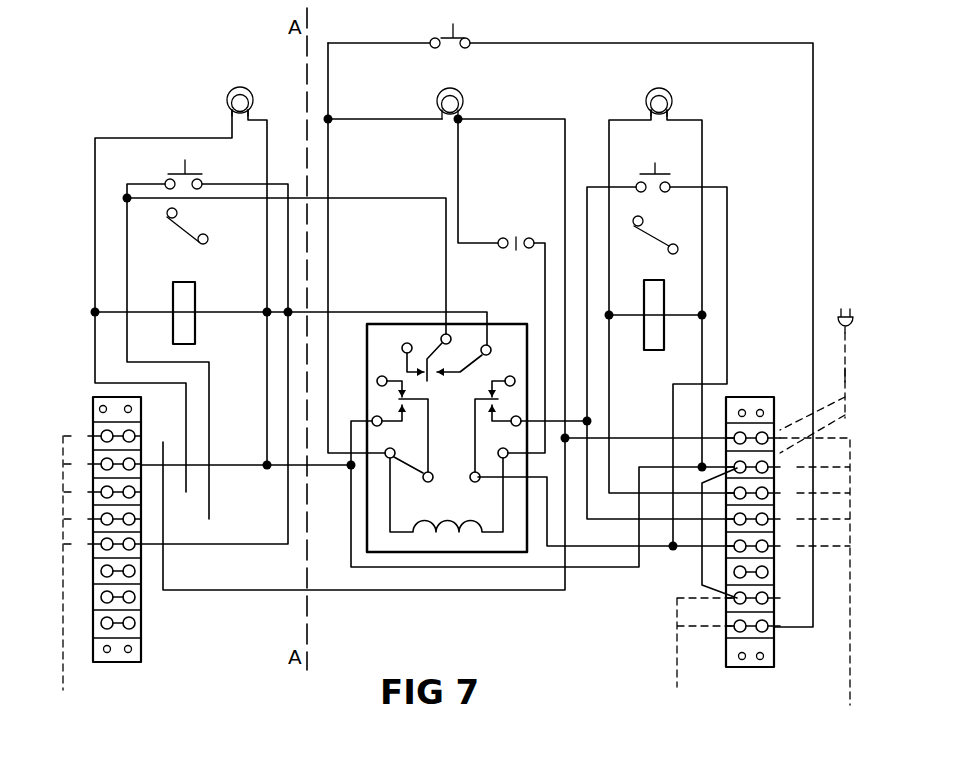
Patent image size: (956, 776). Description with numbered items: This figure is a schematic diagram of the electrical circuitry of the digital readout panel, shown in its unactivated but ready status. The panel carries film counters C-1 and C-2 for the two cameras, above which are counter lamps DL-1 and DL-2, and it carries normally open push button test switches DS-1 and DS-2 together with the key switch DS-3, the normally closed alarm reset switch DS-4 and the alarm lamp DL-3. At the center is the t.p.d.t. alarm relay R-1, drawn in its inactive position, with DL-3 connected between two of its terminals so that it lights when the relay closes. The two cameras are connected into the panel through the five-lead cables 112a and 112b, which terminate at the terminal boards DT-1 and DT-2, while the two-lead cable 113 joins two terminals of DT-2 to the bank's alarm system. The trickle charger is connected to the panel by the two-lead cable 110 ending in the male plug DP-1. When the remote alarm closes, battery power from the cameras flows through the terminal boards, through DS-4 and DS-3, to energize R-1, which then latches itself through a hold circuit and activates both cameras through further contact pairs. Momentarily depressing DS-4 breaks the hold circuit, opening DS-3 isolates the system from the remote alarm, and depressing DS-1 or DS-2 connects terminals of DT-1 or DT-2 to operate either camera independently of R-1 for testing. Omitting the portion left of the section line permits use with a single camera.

The counter lamp DL-1 is at (239, 90).
The counter lamp DL-2 is at (684, 102).
The alarm lamp DL-3 is at (474, 103).
The push button test switch DS-1 is at (206, 169).
The push button test switch DS-2 is at (648, 168).
The key switch DS-3 is at (475, 34).
The alarm reset switch DS-4 is at (517, 228).
The film counter C-1 is at (187, 276).
The film counter C-2 is at (655, 283).
The alarm relay R-1 is at (447, 438).
The terminal board DT-1 is at (102, 545).
The terminal board DT-2 is at (760, 544).
The male plug DP-1 is at (839, 381).
The 2-lead cable 110 is at (845, 375).
The 5-lead cable 112a is at (63, 690).
The 5-lead cable 112b is at (850, 695).
The 2-lead cable 113 is at (677, 670).